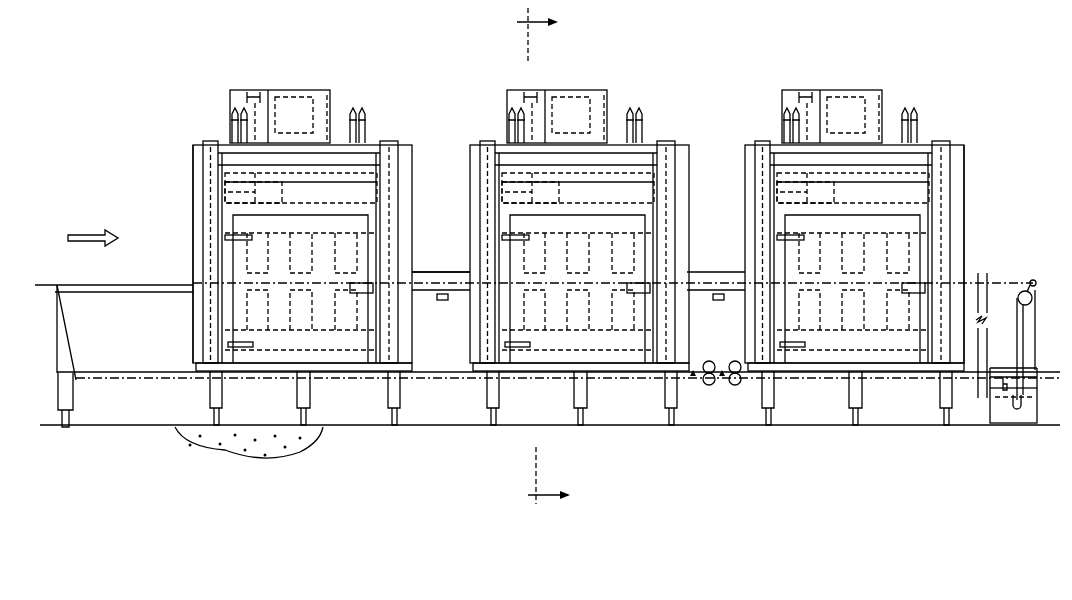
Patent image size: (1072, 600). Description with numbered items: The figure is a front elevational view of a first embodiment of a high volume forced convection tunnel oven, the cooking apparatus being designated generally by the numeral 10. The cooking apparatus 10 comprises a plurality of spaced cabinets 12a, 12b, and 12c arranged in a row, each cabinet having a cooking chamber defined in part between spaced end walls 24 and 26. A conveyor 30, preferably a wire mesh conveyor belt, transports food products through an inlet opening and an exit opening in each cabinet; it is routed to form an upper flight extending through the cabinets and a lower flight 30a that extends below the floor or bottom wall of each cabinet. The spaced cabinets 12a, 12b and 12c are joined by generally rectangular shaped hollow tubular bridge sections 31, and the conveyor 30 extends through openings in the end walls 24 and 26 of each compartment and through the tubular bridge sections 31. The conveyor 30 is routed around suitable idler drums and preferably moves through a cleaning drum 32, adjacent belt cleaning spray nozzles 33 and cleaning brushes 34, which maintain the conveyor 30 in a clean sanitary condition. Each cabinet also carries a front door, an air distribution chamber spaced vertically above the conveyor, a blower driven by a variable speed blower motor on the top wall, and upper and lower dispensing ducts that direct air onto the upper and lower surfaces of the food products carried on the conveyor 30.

The forced convection tunnel oven 10 is at (131, 275).
The cabinet 12a is at (375, 136).
The cabinet 12b is at (595, 234).
The cabinet 12c is at (866, 238).
The end wall 24 is at (193, 173).
The end wall 26 is at (996, 254).
The conveyor 30 is at (1038, 256).
The lower flight 30a is at (418, 383).
The tubular bridge section 31 is at (446, 272).
The cleaning drum 32 is at (1005, 413).
The belt cleaning spray nozzle 33 is at (744, 385).
The cleaning brush 34 is at (740, 362).